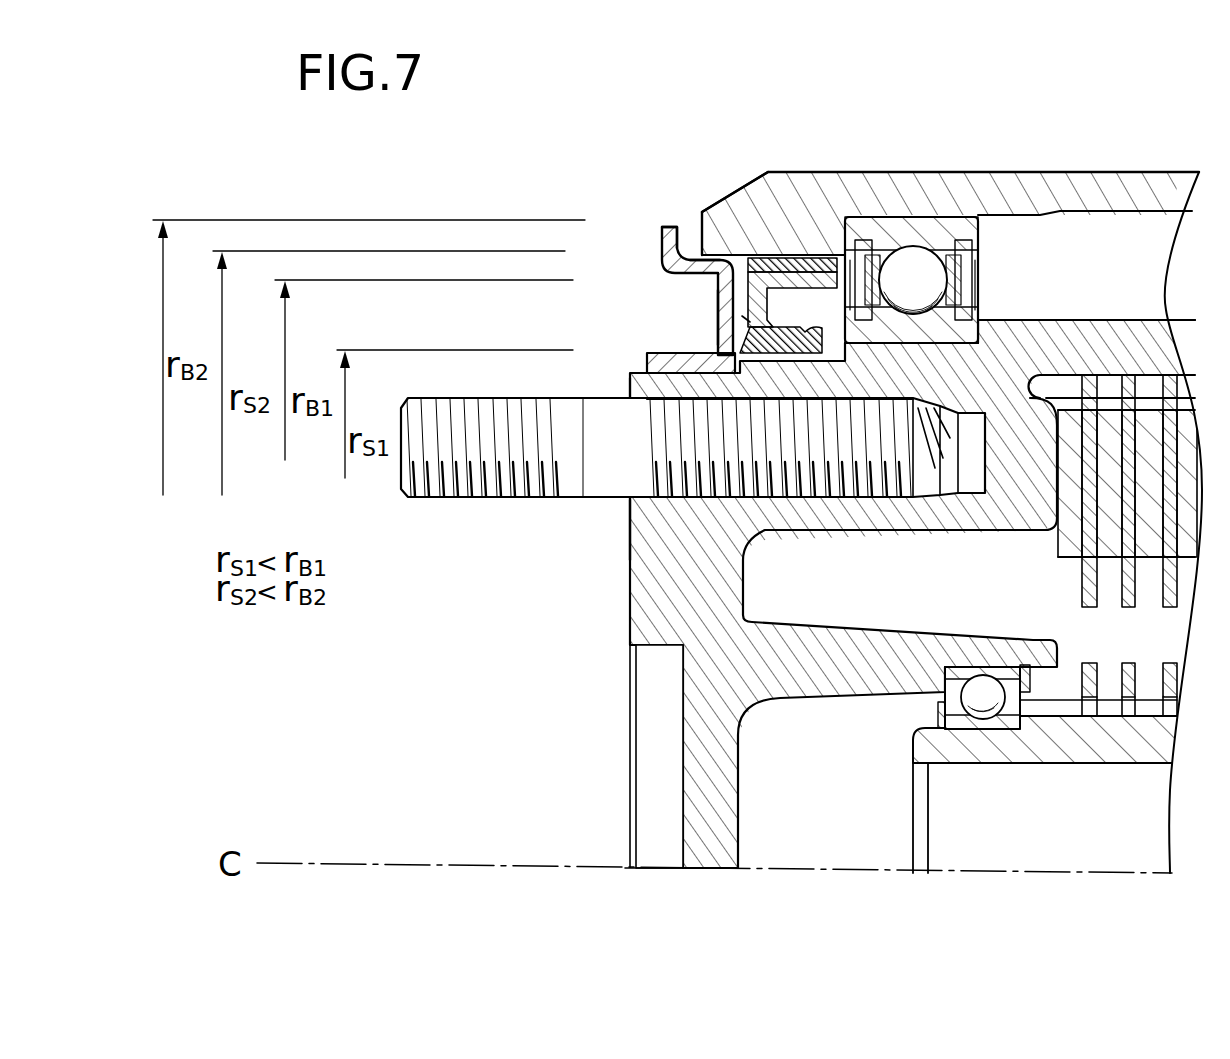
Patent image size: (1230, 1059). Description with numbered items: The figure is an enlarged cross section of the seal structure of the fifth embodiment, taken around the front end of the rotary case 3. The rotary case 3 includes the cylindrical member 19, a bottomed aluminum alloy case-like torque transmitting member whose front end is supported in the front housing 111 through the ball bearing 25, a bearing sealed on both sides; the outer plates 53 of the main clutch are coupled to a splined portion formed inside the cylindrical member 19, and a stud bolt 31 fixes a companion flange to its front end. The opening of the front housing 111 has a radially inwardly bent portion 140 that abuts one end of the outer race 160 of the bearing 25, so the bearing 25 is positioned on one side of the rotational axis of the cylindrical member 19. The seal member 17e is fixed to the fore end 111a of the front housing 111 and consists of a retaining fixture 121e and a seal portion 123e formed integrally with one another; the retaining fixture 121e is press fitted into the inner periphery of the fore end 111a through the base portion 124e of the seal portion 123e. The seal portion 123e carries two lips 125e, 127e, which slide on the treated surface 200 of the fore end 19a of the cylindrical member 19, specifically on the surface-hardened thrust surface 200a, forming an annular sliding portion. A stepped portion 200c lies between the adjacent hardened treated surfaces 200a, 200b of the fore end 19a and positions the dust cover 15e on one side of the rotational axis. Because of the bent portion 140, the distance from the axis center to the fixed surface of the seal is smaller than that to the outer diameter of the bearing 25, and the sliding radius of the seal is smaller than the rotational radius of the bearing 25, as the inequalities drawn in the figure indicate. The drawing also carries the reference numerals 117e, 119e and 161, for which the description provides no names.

The front housing 111 is at (1162, 168).
The fore end of the front housing 111a is at (738, 212).
The base portion of the seal portion 124e is at (768, 257).
The outer race of the bearing 160 is at (905, 242).
The dust cover 15e is at (652, 228).
The top wall of flange member 119e is at (695, 248).
The retaining fixture 121e is at (790, 274).
The radially inwardly bent portion 140 is at (852, 238).
The ball bearing 25 is at (922, 266).
The seal member 17e is at (644, 246).
The rotary case 3 is at (1130, 316).
The bearing seat 161 is at (950, 333).
The cylindrical wall of flange member 117e is at (713, 310).
The seal portion 123e is at (740, 322).
The treated surface 200b is at (667, 374).
The stud bolt 31 is at (478, 488).
The fore end of the cylindrical member 19a is at (638, 538).
The stepped portion 200c is at (742, 395).
The lip 125e is at (778, 373).
The treated surface 200 is at (805, 398).
The thrust surface 200a is at (866, 403).
The lip 127e is at (920, 403).
The outer plates of the main clutch 53 is at (1018, 404).
The cylindrical member 19 is at (612, 602).